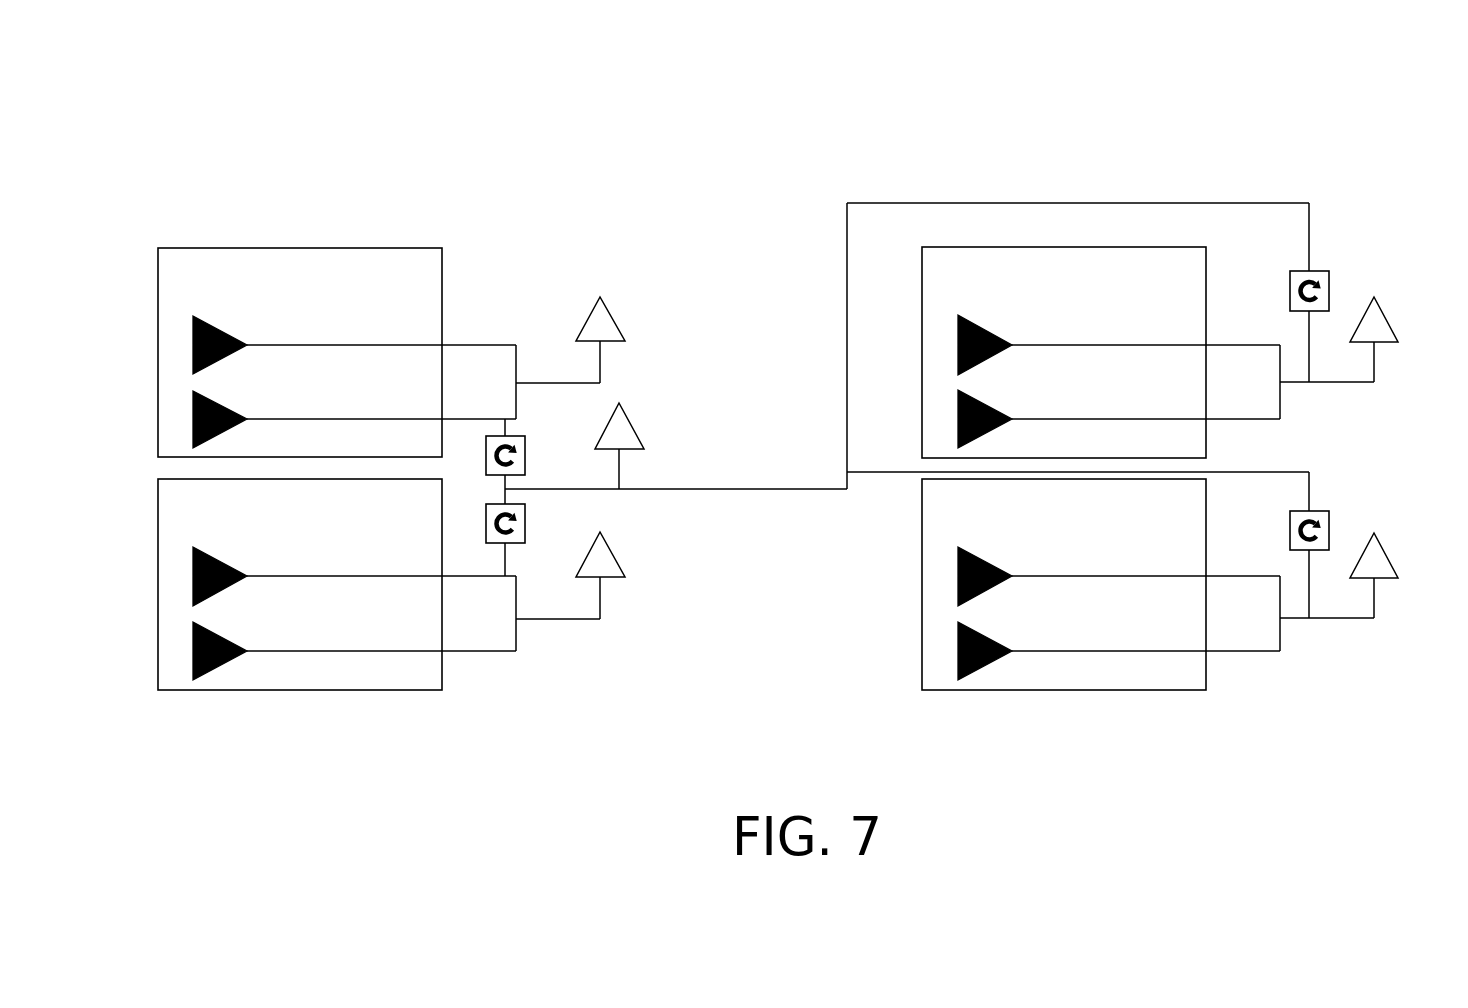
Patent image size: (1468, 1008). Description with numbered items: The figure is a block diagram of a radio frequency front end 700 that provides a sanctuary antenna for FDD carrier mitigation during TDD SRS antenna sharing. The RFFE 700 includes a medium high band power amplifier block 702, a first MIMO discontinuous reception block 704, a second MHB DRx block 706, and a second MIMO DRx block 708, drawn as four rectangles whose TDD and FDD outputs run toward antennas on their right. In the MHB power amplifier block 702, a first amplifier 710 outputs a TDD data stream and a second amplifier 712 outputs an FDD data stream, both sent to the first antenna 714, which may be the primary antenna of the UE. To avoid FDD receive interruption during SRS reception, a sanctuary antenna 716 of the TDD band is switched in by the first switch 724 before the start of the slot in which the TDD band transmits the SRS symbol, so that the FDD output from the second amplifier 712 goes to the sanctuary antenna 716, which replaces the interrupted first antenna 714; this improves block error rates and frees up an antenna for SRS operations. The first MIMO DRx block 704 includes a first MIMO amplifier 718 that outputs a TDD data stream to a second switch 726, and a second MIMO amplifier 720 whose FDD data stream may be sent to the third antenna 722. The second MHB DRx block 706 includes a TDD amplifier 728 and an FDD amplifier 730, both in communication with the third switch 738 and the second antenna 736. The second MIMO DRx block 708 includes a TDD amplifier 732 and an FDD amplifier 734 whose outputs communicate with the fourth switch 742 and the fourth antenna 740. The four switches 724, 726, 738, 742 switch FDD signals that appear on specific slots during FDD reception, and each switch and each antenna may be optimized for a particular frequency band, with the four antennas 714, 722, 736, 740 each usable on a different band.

The radio frequency front end 700 is at (157, 139).
The medium high band power amplifier block 702 is at (200, 248).
The MIMO discontinuous reception block 704 is at (200, 690).
The MHB DRx block 706 is at (975, 247).
The MIMO DRx block 708 is at (975, 690).
The first amplifier 710 is at (193, 345).
The second amplifier 712 is at (193, 419).
The first antenna 714 is at (611, 313).
The sanctuary antenna 716 is at (614, 412).
The first MIMO amplifier 718 is at (193, 576).
The second MIMO amplifier 720 is at (193, 651).
The third antenna 722 is at (611, 549).
The first switch 724 is at (525, 460).
The second switch 726 is at (515, 545).
The TDD amplifier 728 is at (958, 345).
The FDD amplifier 730 is at (958, 419).
The TDD amplifier 732 is at (958, 576).
The FDD amplifier 734 is at (958, 651).
The second antenna 736 is at (1386, 314).
The third switch 738 is at (1290, 287).
The fourth antenna 740 is at (1386, 550).
The fourth switch 742 is at (1290, 523).